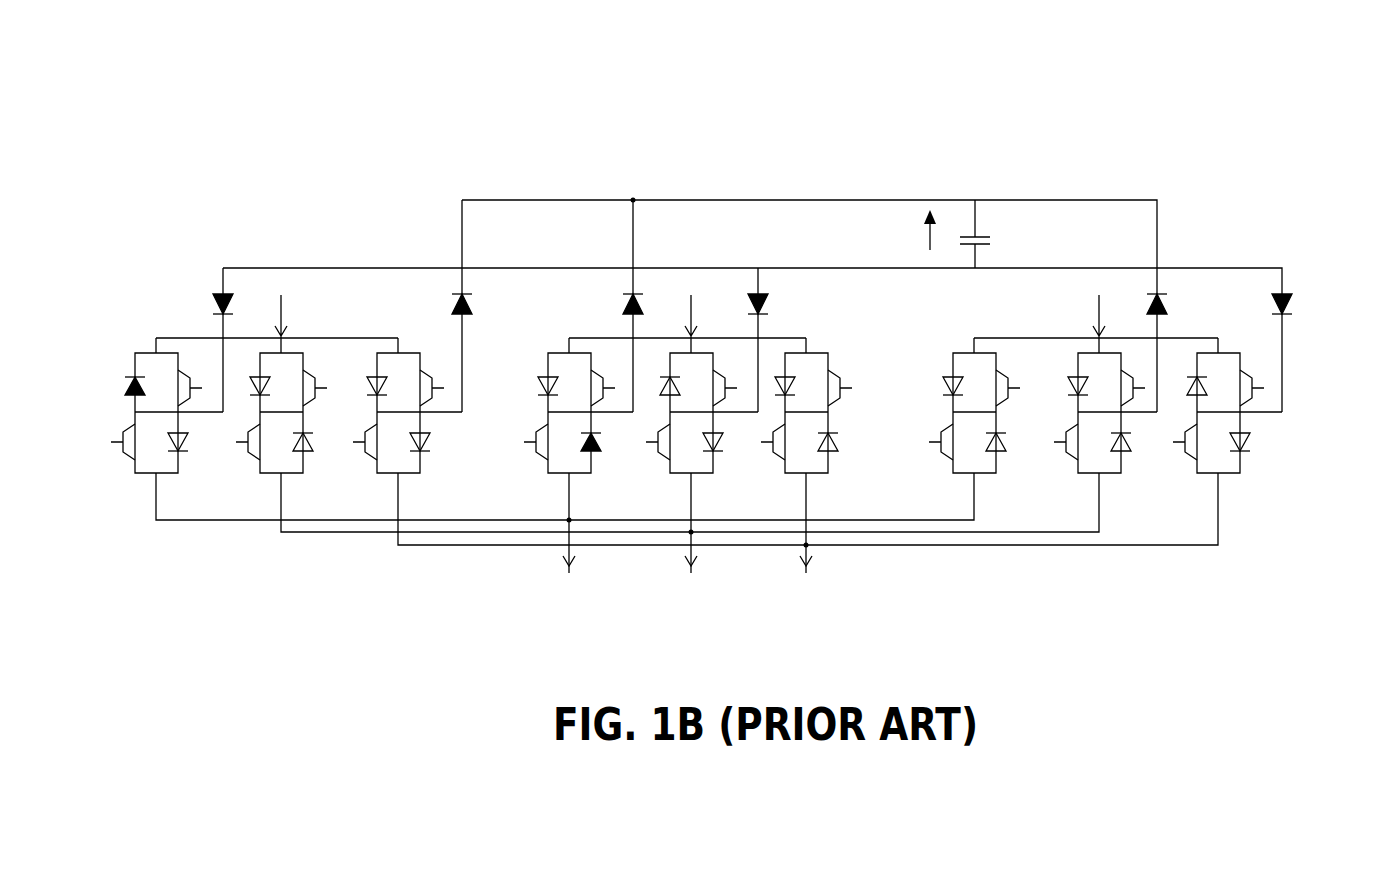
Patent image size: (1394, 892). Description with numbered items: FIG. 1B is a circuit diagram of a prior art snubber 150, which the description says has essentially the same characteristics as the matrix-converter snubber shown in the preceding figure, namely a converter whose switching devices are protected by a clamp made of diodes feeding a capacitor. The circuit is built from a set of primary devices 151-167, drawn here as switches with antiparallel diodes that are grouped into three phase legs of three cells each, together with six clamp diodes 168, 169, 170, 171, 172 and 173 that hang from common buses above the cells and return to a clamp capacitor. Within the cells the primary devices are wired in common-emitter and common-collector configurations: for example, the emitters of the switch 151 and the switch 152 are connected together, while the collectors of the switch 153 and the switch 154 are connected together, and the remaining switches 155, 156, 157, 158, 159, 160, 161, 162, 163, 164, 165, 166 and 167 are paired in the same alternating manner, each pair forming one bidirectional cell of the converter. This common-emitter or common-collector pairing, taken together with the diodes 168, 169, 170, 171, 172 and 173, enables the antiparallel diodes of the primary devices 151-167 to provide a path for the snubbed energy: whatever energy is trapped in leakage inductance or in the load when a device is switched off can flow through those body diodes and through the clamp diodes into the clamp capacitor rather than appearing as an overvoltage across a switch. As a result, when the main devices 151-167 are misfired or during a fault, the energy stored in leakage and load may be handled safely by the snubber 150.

The prior art snubber 150 is at (676, 114).
The switch 151 is at (200, 386).
The switch 152 is at (113, 446).
The switch 153 is at (325, 386).
The switch 154 is at (238, 446).
The primary device 155 is at (442, 386).
The primary device 156 is at (355, 446).
The primary device 157 is at (613, 386).
The primary device 158 is at (526, 446).
The primary device 159 is at (735, 386).
The primary device 160 is at (648, 446).
The primary device 161 is at (850, 386).
The primary device 162 is at (763, 446).
The primary device 163 is at (1018, 386).
The primary device 164 is at (931, 446).
The primary device 165 is at (1143, 386).
The primary device 166 is at (1056, 446).
The primary device 167 is at (1262, 386).
The diode 168 is at (212, 298).
The diode 169 is at (450, 298).
The diode 170 is at (622, 298).
The diode 171 is at (770, 300).
The diode 172 is at (1146, 298).
The diode 173 is at (1294, 298).